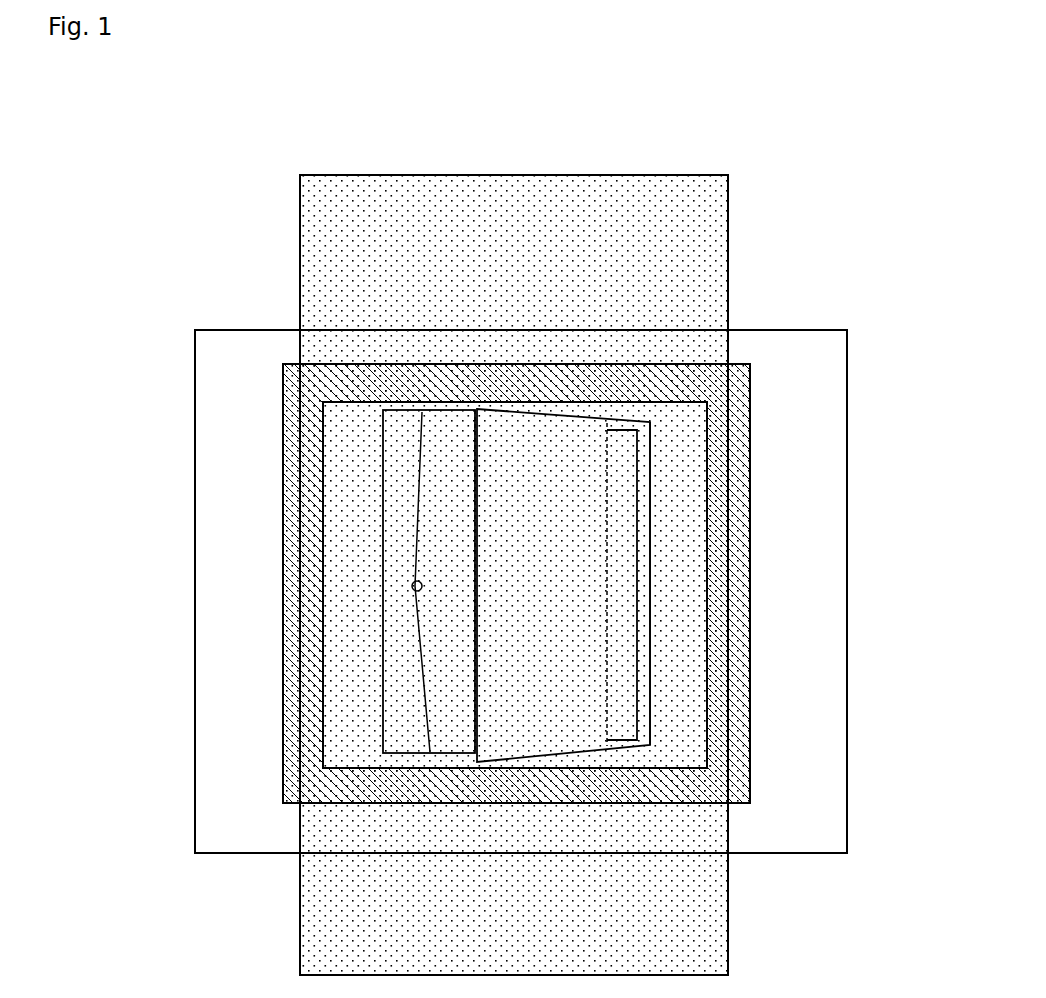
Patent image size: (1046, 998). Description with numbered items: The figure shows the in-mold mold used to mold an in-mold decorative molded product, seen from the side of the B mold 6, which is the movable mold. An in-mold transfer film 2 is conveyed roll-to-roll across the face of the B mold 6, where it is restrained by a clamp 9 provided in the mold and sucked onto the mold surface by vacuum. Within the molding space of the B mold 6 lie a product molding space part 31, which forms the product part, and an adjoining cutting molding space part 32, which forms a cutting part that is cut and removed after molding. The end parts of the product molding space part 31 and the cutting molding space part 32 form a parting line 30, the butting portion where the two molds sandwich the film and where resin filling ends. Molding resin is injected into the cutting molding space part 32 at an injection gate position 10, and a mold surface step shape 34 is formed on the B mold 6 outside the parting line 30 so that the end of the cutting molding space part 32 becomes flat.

The in-mold transfer film 2 is at (376, 253).
The B mold 6 is at (233, 609).
The clamp 9 is at (738, 417).
The injection gate position 10 is at (394, 581).
The parting line 30 is at (648, 488).
The product molding space part 31 is at (572, 571).
The cutting molding space part 32 is at (612, 464).
The mold surface step shape 34 is at (659, 531).